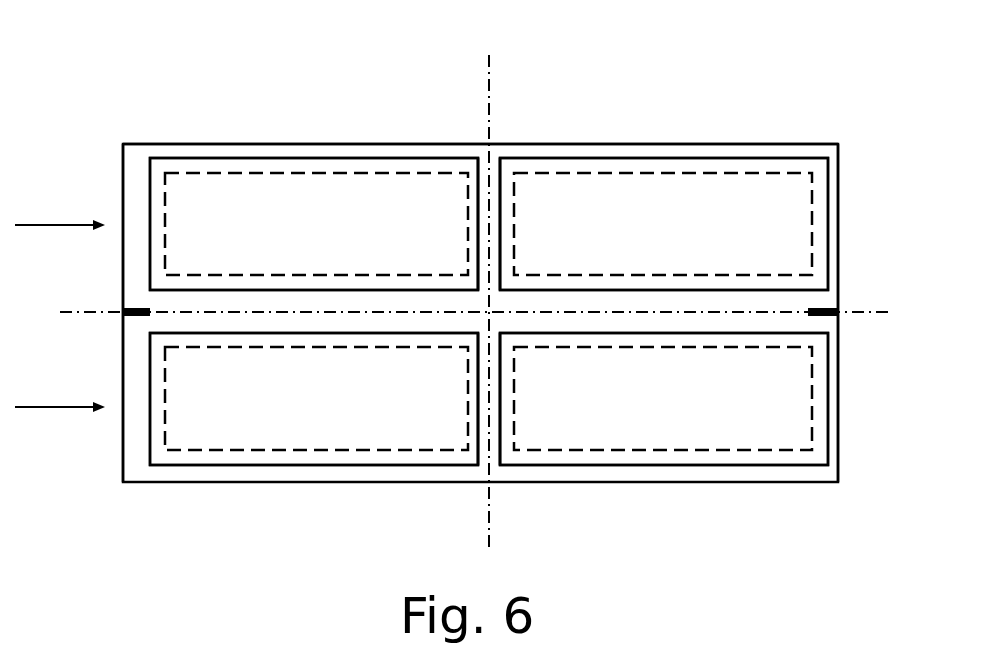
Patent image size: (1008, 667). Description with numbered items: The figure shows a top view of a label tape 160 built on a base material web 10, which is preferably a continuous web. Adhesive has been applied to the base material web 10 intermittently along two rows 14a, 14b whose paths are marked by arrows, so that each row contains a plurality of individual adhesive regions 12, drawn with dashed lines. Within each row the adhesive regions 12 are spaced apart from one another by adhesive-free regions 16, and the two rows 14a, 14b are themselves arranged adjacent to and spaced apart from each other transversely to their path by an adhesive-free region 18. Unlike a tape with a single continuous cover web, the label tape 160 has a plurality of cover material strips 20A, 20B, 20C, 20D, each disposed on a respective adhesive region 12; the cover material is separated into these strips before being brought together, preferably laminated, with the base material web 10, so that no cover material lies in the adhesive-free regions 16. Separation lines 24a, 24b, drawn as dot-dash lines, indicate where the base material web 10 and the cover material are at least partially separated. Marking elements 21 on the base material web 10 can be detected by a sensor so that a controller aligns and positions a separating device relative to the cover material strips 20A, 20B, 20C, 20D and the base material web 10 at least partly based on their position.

The label tape 160 is at (798, 86).
The base material web 10 is at (255, 146).
The adhesive region 12 is at (488, 311).
The first row 14a is at (60, 202).
The second row 14b is at (60, 383).
The adhesive-free region 16 is at (139, 182).
The adhesive-free region 18 is at (292, 148).
The cover material strip 20A is at (178, 242).
The cover material strip 20B is at (757, 192).
The cover material strip 20C is at (178, 407).
The cover material strip 20D is at (715, 432).
The marking element 21 is at (100, 322).
The separation line 24a is at (489, 62).
The separation line 24b is at (860, 312).